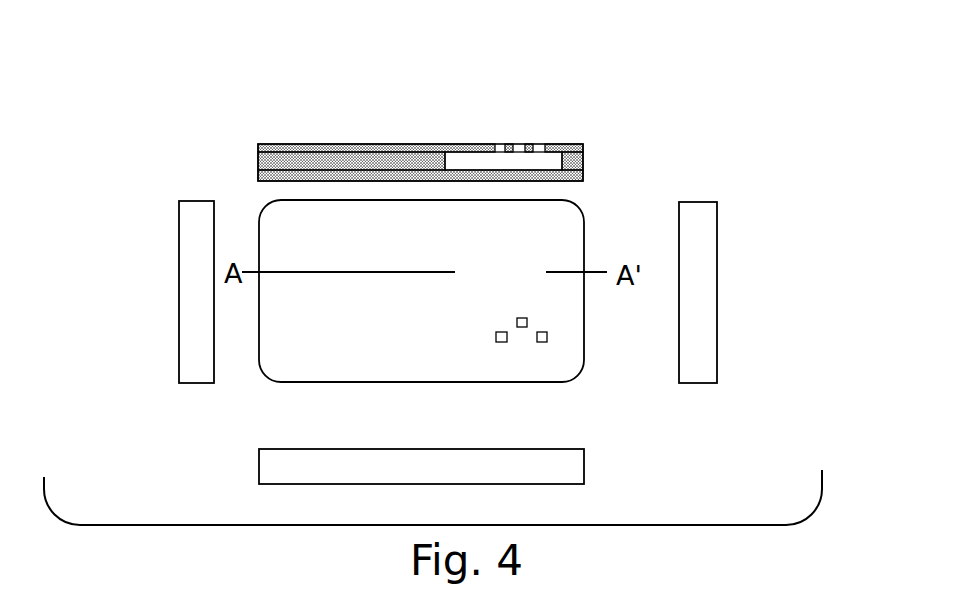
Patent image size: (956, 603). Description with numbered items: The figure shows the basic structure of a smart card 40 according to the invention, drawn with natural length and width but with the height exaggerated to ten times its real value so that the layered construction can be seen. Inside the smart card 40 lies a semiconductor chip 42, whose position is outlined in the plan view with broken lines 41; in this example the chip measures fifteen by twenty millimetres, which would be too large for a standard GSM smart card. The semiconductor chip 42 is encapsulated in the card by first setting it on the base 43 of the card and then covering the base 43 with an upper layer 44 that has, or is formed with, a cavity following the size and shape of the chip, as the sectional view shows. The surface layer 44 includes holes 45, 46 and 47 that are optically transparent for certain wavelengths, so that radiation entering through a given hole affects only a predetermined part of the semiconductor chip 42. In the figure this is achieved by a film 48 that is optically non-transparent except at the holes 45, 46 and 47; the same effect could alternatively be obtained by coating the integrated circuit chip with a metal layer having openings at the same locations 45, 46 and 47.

The smart card 40 is at (373, 318).
The broken lines 41 is at (472, 357).
The semiconductor chip 42 is at (555, 163).
The base 43 is at (568, 177).
The upper layer 44 is at (317, 165).
The hole 45 is at (500, 144).
The hole 46 is at (520, 150).
The hole 47 is at (568, 144).
The film 48 is at (350, 144).